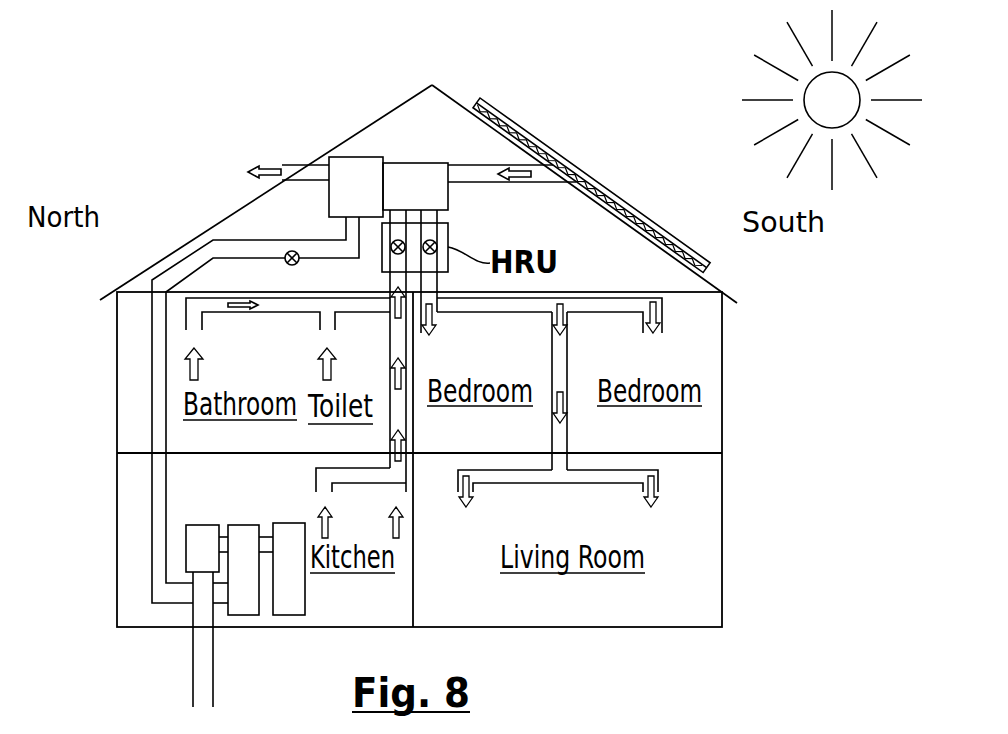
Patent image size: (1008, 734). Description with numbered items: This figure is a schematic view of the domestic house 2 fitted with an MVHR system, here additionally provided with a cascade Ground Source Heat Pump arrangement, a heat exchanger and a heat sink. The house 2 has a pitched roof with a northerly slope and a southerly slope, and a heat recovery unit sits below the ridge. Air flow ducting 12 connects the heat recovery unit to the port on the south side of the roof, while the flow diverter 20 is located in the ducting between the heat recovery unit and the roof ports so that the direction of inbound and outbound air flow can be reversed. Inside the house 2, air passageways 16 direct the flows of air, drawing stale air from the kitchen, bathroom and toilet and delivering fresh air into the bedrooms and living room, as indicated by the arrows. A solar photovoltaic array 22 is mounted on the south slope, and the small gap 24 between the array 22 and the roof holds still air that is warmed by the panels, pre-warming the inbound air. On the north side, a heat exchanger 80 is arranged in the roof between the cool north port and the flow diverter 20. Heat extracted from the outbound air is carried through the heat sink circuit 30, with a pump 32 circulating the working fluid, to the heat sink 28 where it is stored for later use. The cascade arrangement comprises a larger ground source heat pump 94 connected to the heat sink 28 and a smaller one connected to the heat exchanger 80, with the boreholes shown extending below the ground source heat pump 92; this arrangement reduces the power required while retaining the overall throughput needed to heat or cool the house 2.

The domestic house 2 is at (84, 437).
The air flow ducting 12 is at (477, 173).
The air passageways 16 is at (288, 302).
The flow diverter 20 is at (417, 186).
The solar photovoltaic array 22 is at (508, 115).
The gap 24 is at (707, 279).
The heat sink 28 is at (288, 582).
The heat sink circuit 30 is at (152, 380).
The pump 32 is at (290, 253).
The heat exchanger 80 is at (358, 176).
The ground source heat pump 92 is at (197, 537).
The ground source heat pump 94 is at (243, 585).